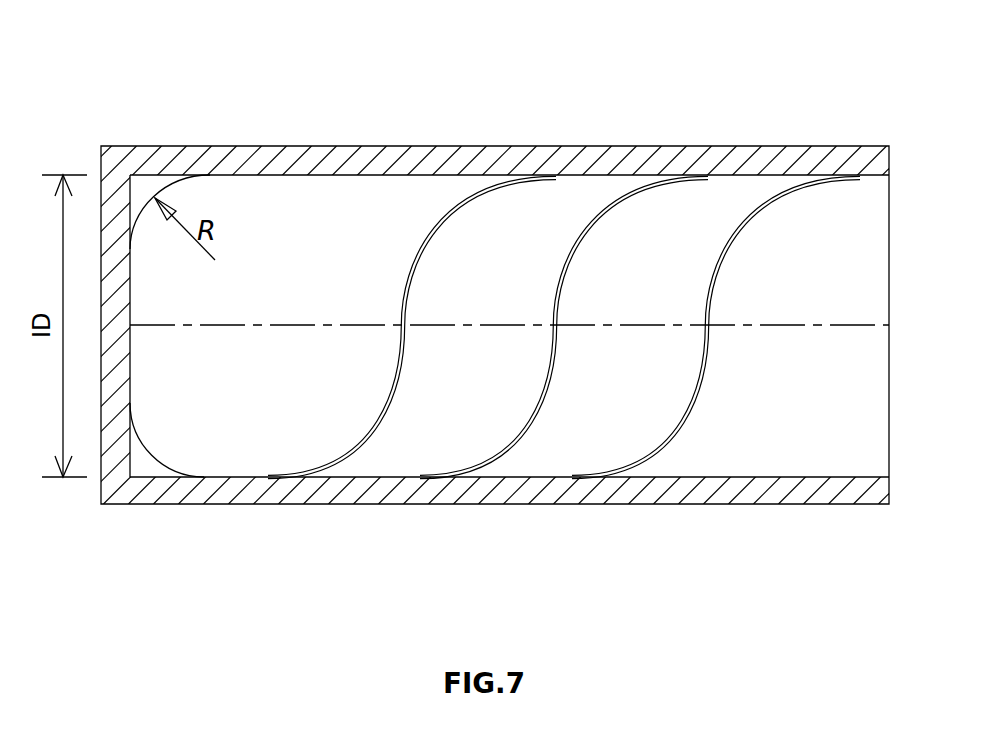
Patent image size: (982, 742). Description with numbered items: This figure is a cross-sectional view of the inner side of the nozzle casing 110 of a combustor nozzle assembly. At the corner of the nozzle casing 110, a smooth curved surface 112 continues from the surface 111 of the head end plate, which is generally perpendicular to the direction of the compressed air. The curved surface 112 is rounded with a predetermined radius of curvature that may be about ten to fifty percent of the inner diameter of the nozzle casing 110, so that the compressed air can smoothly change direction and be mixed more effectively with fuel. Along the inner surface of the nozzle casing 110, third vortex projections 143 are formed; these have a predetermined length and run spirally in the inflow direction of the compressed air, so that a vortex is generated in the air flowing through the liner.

The nozzle casing 110 is at (370, 158).
The surface of head end plate 111 is at (130, 298).
The curved surface 112 is at (150, 445).
The third vortex projections 143 is at (355, 433).